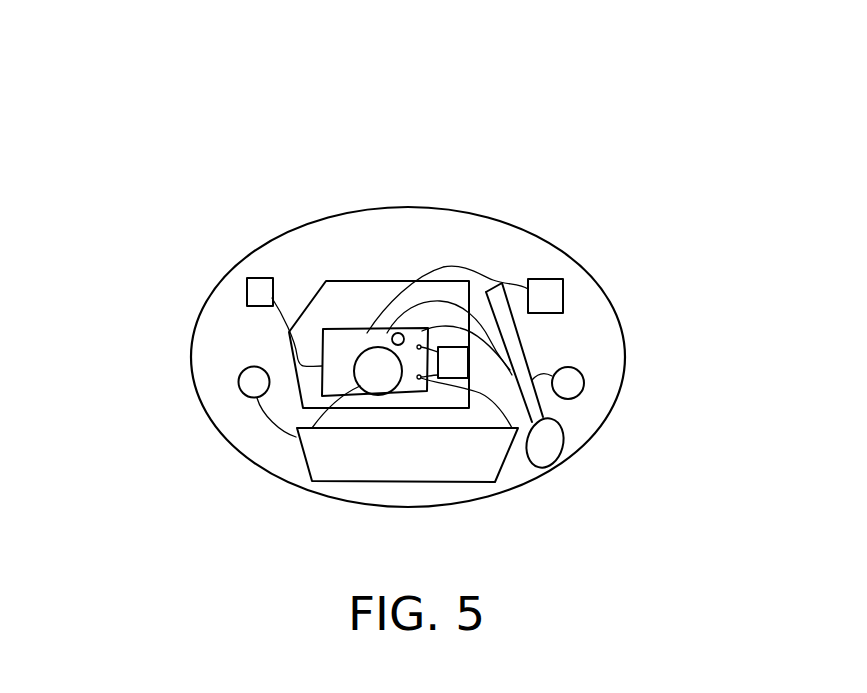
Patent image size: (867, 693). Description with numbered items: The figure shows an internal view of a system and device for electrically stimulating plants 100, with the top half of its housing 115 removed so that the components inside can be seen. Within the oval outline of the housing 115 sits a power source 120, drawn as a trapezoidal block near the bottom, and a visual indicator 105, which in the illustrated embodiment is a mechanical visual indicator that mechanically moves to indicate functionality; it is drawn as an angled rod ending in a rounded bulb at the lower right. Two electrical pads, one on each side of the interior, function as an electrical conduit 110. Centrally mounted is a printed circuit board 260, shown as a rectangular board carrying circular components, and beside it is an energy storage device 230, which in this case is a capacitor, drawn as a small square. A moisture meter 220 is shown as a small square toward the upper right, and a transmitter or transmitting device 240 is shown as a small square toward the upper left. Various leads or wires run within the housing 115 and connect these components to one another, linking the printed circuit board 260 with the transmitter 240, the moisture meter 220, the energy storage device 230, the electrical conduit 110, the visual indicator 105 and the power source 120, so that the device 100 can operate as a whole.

The system and device for electrically stimulating plants 100 is at (193, 93).
The visual indicator 105 is at (498, 302).
The electrical conduit 110 is at (238, 383).
The housing 115 is at (513, 243).
The power source 120 is at (415, 485).
The moisture meter 220 is at (563, 291).
The energy storage device 230 is at (453, 365).
The transmitter 240 is at (246, 291).
The printed circuit board 260 is at (349, 343).